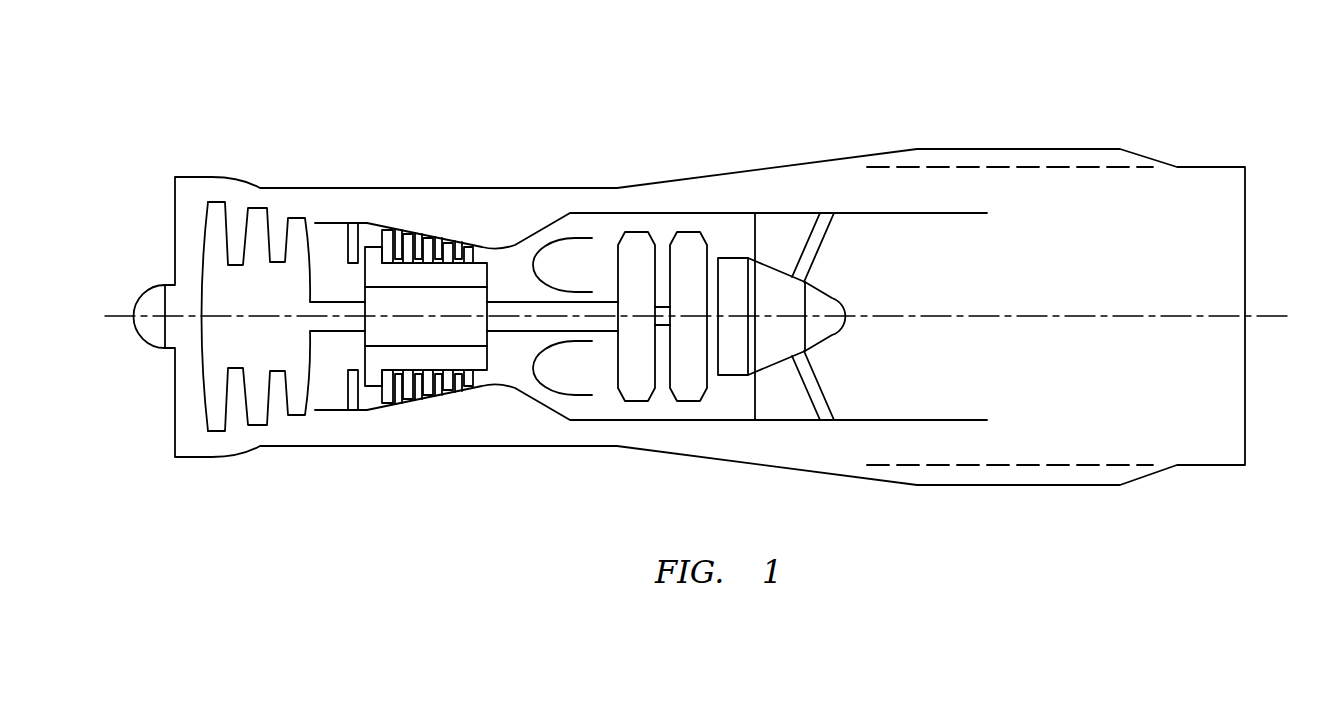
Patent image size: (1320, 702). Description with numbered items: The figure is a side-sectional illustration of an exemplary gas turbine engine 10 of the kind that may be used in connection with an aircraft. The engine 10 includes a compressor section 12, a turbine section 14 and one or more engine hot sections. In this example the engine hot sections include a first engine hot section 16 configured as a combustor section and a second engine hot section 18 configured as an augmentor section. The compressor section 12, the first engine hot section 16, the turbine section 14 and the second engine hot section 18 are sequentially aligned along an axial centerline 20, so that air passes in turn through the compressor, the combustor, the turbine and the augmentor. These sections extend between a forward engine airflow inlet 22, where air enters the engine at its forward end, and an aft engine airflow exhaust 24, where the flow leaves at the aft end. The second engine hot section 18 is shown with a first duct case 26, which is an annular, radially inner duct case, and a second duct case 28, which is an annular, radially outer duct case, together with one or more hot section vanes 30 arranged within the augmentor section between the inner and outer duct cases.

The gas turbine engine 10 is at (704, 274).
The compressor section 12 is at (423, 215).
The turbine section 14 is at (667, 195).
The first engine hot section 16 is at (567, 197).
The second engine hot section 18 is at (806, 198).
The axial centerline 20 is at (1273, 318).
The forward engine airflow inlet 22 is at (175, 412).
The aft engine airflow exhaust 24 is at (1245, 433).
The first duct case 26 is at (826, 340).
The second duct case 28 is at (958, 420).
The hot section vane 30 is at (798, 395).